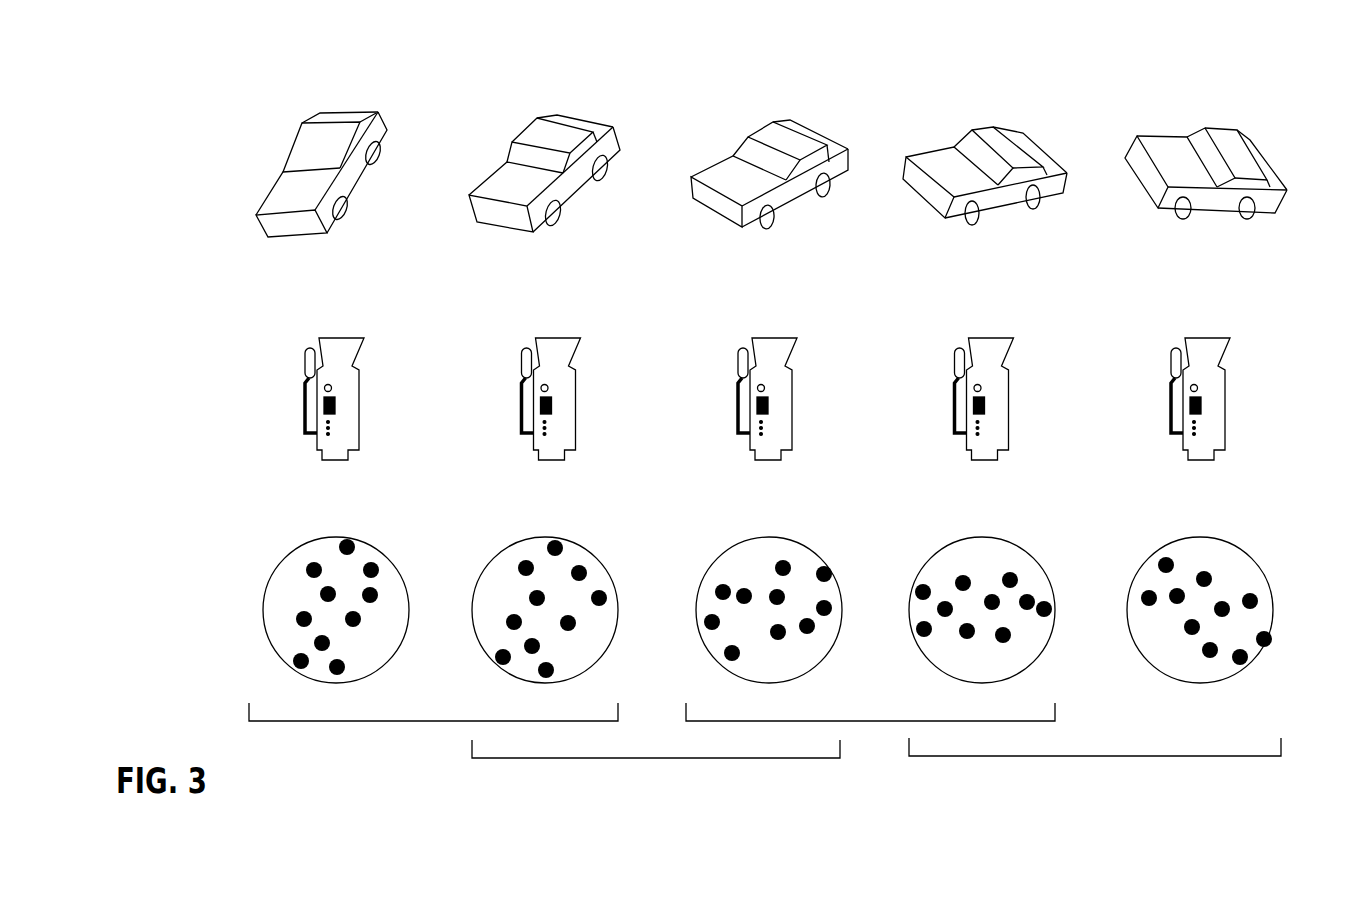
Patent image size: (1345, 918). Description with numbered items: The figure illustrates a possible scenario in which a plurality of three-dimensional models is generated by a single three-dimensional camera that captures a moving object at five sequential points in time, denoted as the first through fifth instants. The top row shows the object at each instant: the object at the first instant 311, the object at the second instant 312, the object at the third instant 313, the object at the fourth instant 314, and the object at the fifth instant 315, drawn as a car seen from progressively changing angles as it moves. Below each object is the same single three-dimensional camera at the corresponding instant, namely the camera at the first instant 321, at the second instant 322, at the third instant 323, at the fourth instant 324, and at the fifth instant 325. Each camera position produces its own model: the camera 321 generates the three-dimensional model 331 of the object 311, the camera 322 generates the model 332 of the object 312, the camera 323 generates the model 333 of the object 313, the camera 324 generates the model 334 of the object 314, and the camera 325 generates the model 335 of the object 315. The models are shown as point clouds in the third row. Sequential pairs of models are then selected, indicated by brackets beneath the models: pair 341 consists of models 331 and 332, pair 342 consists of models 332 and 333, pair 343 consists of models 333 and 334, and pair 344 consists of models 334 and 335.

The object at T1 311 is at (1219, 127).
The object at T2 312 is at (1000, 127).
The object at T3 313 is at (786, 127).
The object at T4 314 is at (560, 128).
The object at T5 315 is at (350, 126).
The single 3D camera at time T1 321 is at (1232, 399).
The single 3D camera at time T2 322 is at (1016, 399).
The single 3D camera at time T3 323 is at (799, 399).
The single 3D camera at time T4 324 is at (583, 399).
The single 3D camera at time T5 325 is at (359, 390).
The 3D model of the object at time T1 331 is at (1252, 559).
The 3D model of the object at time T2 332 is at (1034, 559).
The 3D model of the object at time T3 333 is at (821, 559).
The 3D model of the object at time T4 334 is at (596, 559).
The 3D model of the object at time T5 335 is at (385, 559).
The pair of 3D models 341 is at (1093, 756).
The pair of 3D models 342 is at (868, 721).
The pair of 3D models 343 is at (653, 758).
The pair of 3D models 344 is at (431, 721).